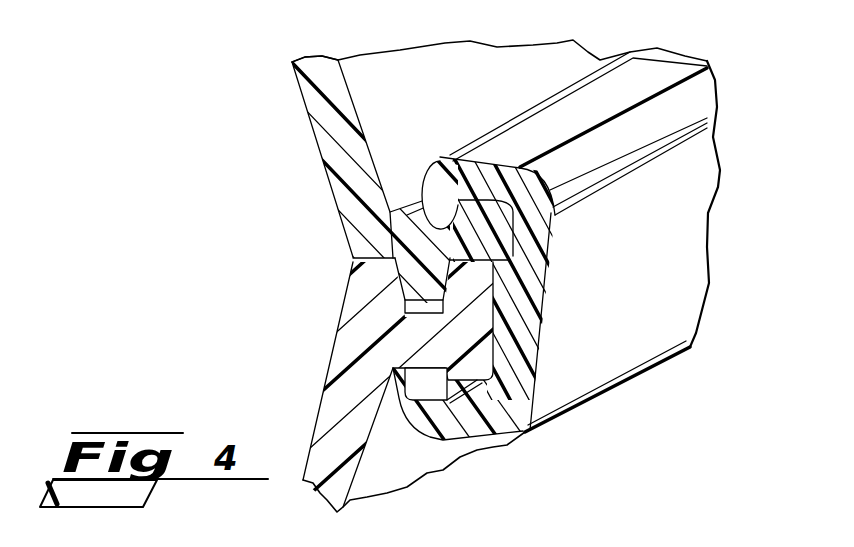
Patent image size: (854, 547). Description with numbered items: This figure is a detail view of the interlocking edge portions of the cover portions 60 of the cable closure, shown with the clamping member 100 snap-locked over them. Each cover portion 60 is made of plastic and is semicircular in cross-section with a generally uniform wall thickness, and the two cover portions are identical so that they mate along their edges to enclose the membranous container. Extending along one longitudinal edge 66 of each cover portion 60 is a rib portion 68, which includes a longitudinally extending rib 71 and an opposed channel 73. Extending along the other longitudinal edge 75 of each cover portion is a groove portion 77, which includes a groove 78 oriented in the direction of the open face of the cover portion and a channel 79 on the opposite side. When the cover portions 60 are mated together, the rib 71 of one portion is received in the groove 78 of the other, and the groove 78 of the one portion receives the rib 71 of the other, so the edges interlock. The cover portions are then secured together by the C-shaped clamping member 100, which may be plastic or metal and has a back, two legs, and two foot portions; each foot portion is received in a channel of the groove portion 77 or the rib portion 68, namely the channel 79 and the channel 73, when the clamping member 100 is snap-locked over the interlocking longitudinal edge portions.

The cover portion 60 is at (320, 83).
The longitudinal edge 66 is at (357, 243).
The rib portion 68 is at (486, 233).
The rib 71 is at (420, 292).
The channel 73 is at (419, 198).
The longitudinal edge 75 is at (356, 268).
The groove portion 77 is at (357, 380).
The groove 78 is at (428, 317).
The channel 79 is at (393, 370).
The clamping member 100 is at (540, 455).